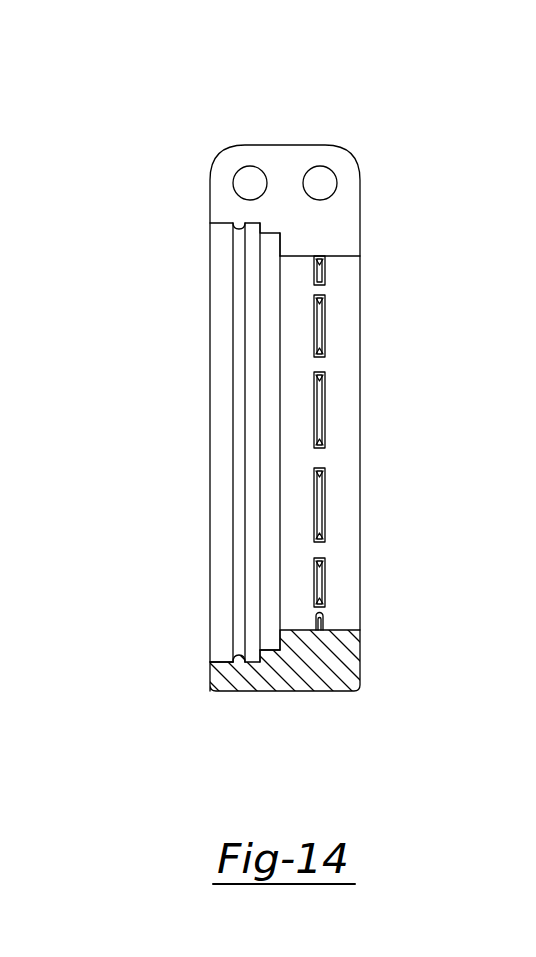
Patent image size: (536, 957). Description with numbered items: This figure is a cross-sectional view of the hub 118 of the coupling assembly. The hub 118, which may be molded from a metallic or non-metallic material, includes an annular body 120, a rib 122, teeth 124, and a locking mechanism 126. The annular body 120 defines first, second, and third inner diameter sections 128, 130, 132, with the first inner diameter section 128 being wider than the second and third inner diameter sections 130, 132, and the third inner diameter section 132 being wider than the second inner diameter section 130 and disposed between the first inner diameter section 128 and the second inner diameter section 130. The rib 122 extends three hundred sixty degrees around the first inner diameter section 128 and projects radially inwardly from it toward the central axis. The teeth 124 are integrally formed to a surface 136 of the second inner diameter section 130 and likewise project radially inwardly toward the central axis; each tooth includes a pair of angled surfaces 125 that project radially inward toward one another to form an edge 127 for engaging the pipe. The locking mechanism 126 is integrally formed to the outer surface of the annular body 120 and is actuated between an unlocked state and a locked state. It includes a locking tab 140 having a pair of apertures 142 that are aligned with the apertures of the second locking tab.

The hub 118 is at (212, 714).
The annular body 120 is at (342, 693).
The rib 122 is at (240, 662).
The teeth 124 is at (326, 390).
The angled surfaces 125 is at (314, 565).
The locking mechanism 126 is at (186, 116).
The edge 127 is at (326, 592).
The first inner diameter section 128 is at (216, 672).
The second inner diameter section 130 is at (341, 631).
The third inner diameter section 132 is at (268, 653).
The surface 136 is at (347, 432).
The locking tab 140 is at (346, 232).
The apertures 142 is at (320, 172).